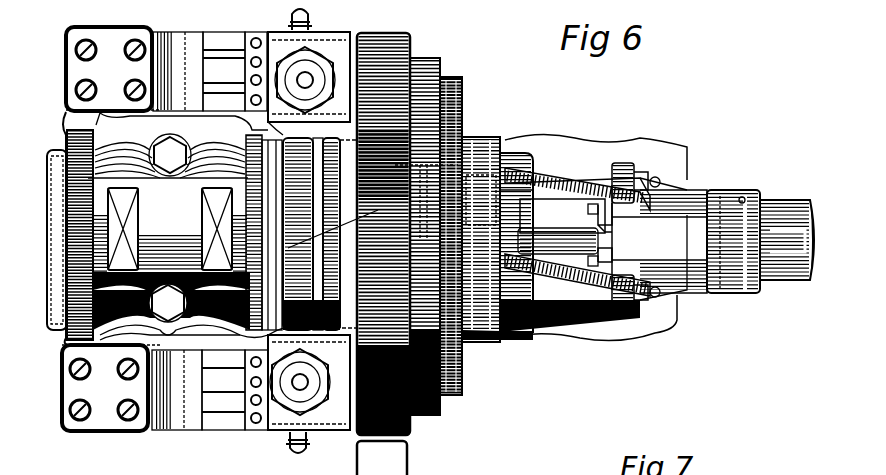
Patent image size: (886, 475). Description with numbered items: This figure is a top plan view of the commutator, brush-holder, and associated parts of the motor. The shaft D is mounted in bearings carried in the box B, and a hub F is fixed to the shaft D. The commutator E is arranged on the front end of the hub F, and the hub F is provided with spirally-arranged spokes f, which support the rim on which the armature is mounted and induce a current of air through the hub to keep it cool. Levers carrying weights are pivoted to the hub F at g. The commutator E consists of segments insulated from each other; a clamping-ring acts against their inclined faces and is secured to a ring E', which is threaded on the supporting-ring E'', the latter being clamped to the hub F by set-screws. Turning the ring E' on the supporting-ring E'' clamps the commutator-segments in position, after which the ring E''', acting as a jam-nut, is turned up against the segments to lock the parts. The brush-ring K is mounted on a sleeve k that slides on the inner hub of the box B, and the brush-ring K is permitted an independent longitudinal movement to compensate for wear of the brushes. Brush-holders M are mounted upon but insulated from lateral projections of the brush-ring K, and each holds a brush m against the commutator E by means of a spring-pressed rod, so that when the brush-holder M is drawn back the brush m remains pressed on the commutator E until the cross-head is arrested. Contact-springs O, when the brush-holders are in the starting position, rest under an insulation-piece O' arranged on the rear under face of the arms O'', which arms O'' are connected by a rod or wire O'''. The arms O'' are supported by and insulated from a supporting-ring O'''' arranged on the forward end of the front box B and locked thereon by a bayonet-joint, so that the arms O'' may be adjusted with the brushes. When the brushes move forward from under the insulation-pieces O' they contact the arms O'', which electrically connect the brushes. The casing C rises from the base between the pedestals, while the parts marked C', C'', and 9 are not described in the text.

The contact-spring O is at (222, 235).
The insulation-piece O' is at (113, 69).
The arm O'' is at (177, 231).
The rod or wire O''' is at (42, 261).
The supporting-ring O'''' is at (170, 170).
The brush-holder M is at (264, 38).
The brush m is at (357, 40).
The box B is at (169, 234).
The brush-ring K is at (330, 207).
The sleeve k is at (333, 233).
The commutator E is at (409, 227).
The ring E' is at (497, 220).
The supporting-ring E'' is at (542, 215).
The ring E''' is at (499, 231).
The casing C is at (659, 241).
The collar C' is at (746, 230).
The coupling bar C'' is at (561, 215).
The shaft D is at (778, 282).
The hub F is at (575, 318).
The spoke f is at (672, 212).
The pivot g is at (627, 165).
The pivot pin 9 is at (625, 315).